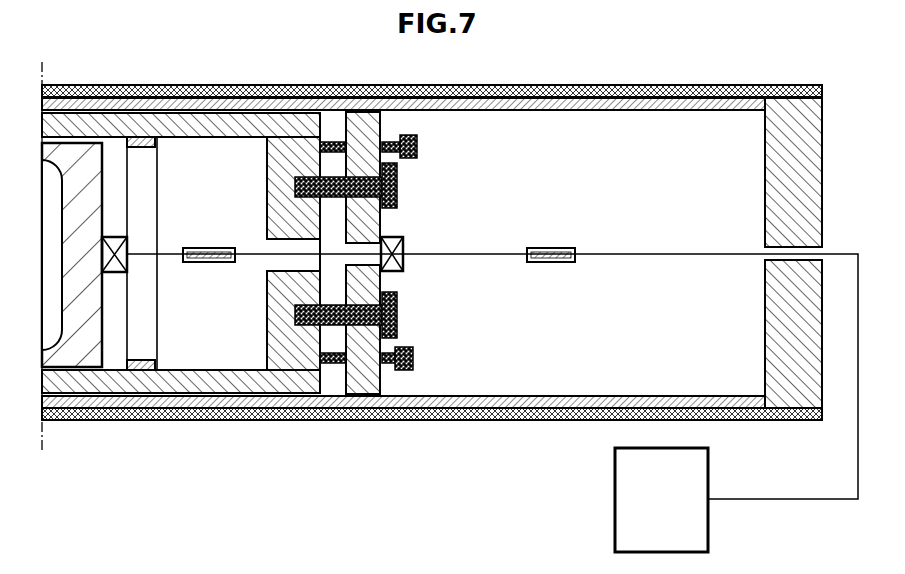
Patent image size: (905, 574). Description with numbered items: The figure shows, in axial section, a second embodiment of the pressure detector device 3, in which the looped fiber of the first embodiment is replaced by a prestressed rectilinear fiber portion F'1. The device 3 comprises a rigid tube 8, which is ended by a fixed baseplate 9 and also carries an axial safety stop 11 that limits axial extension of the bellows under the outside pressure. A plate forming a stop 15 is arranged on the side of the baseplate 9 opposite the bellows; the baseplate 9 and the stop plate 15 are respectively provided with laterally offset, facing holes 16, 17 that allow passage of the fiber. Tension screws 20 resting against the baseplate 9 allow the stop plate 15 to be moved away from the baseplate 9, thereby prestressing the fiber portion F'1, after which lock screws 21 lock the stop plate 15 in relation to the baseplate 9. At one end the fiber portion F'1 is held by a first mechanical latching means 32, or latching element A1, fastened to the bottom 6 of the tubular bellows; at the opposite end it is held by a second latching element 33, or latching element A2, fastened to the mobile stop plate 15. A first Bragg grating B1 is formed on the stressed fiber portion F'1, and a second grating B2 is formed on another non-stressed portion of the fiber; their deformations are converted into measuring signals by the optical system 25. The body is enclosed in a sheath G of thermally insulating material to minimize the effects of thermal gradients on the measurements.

The device 3 is at (357, 434).
The bottom of tubular bellows 6 is at (77, 162).
The rigid tube 8 is at (199, 122).
The baseplate 9 is at (286, 133).
The axial safety stop 11 is at (146, 141).
The stop plate 15 is at (368, 122).
The hole 16 is at (283, 243).
The hole 17 is at (380, 274).
The tension screws 20 is at (417, 146).
The lock screws 21 is at (397, 185).
The optical system 25 is at (678, 516).
The first mechanical latching means 32 is at (124, 274).
The second latching element 33 is at (402, 272).
The first latching element A1 is at (118, 242).
The second latching element A2 is at (398, 241).
The first Bragg grating B1 is at (209, 241).
The second Bragg grating B2 is at (551, 241).
The prestressed rectilinear fiber portion F'1 is at (225, 285).
The sheath G is at (718, 85).